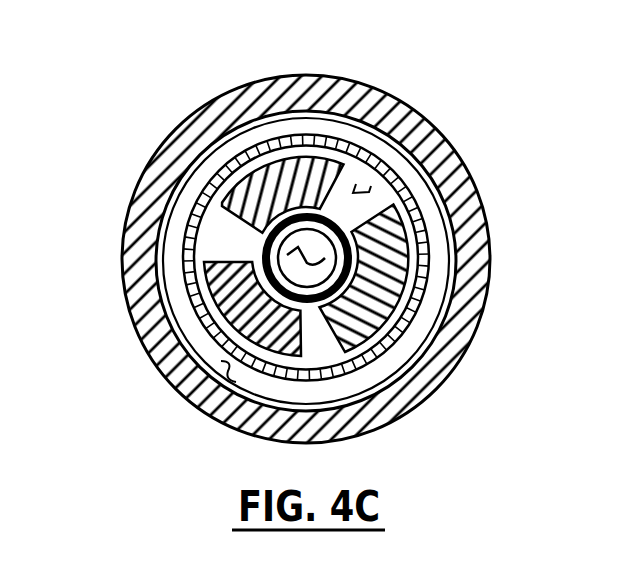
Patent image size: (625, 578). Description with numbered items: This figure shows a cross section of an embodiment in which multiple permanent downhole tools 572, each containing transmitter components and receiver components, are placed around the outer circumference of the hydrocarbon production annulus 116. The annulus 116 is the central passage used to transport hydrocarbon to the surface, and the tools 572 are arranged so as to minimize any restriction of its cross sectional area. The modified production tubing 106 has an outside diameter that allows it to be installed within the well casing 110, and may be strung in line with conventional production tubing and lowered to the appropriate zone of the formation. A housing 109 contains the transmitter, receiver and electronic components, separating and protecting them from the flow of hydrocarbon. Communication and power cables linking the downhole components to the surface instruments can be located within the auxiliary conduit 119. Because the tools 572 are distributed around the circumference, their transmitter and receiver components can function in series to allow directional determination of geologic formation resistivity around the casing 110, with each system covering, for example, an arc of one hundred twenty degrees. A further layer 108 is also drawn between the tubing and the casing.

The well casing 110 is at (165, 140).
The tubing 106 is at (185, 215).
The braided layer 108 is at (335, 348).
The permanent downhole tool 572 is at (292, 150).
The hydrocarbon production annulus 116 is at (326, 252).
The housing 109 is at (362, 182).
The auxiliary conduit 119 is at (216, 383).